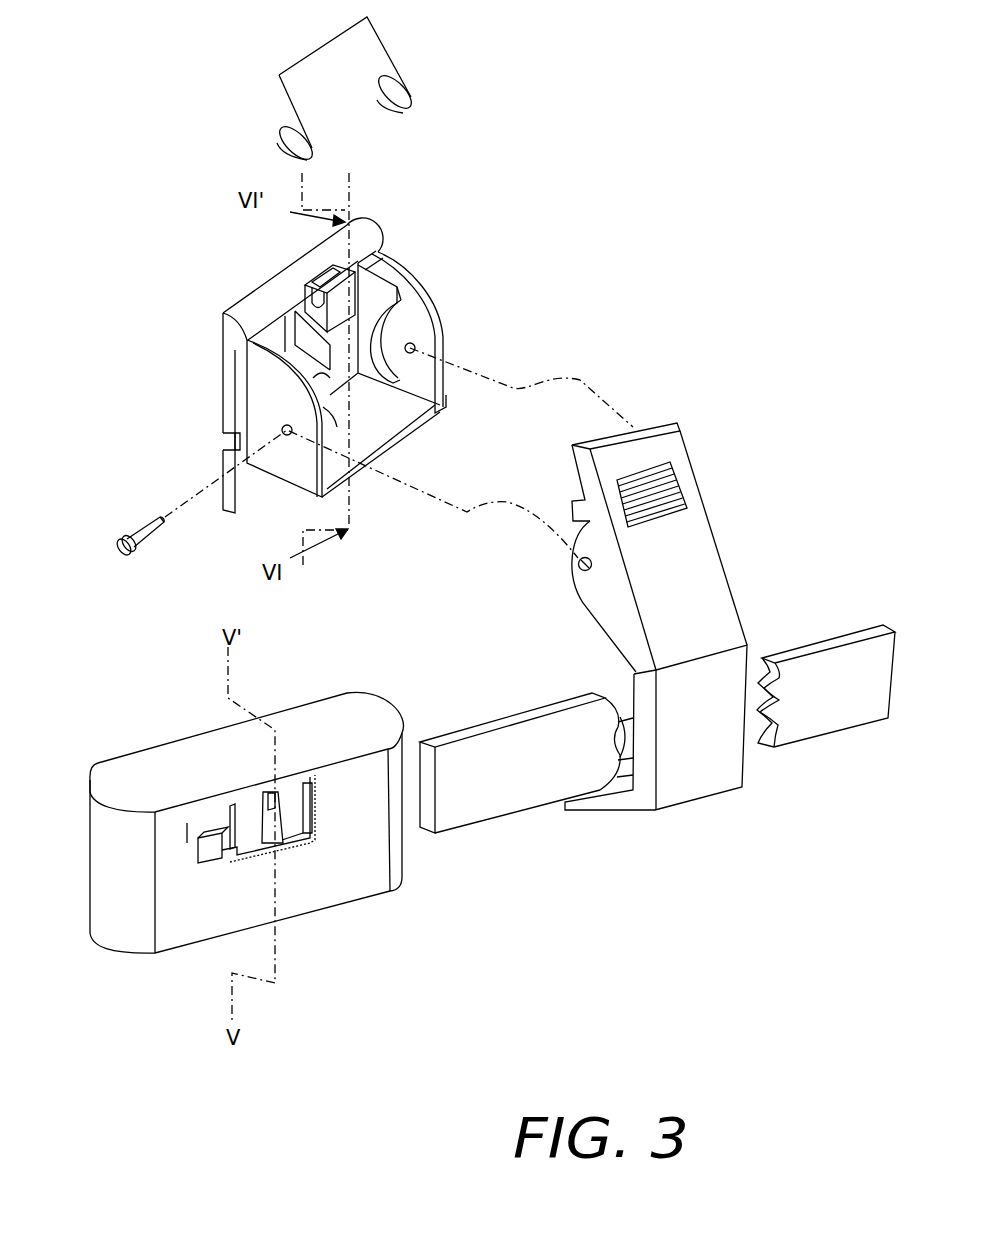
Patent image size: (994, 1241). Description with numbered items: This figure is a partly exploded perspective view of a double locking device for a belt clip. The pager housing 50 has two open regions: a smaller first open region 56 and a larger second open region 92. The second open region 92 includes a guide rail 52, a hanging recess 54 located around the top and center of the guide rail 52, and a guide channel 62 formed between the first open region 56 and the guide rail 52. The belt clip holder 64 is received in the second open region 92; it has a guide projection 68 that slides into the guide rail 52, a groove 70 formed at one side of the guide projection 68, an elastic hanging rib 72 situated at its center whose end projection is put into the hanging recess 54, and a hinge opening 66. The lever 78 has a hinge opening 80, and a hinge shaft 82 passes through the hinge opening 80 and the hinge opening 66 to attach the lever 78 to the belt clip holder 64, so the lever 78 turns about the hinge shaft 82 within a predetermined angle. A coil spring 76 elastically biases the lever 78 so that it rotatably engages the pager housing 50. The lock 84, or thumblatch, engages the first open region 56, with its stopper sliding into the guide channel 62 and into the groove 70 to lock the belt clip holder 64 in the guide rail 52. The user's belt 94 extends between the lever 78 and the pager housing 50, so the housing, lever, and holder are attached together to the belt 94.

The pager housing 50 is at (83, 620).
The guide rail 52 is at (308, 840).
The hanging recess 54 is at (273, 787).
The first open region 56 is at (198, 837).
The guide channel 62 is at (187, 843).
The belt clip holder 64 is at (548, 126).
The hinge opening 66 is at (414, 348).
The guide projection 68 is at (240, 363).
The groove 70 is at (232, 440).
The elastic hanging rib 72 is at (313, 315).
The coil spring 76 is at (400, 58).
The lever 78 is at (710, 528).
The hinge opening 80 is at (578, 566).
The hinge shaft 82 is at (153, 517).
The lock 84 is at (207, 840).
The second open region 92 is at (292, 783).
The belt 94 is at (837, 658).